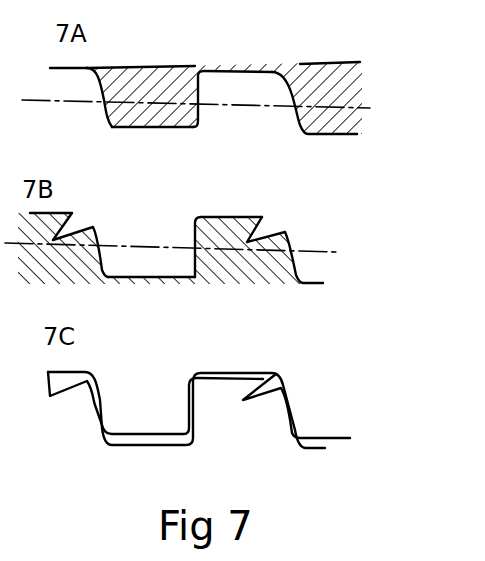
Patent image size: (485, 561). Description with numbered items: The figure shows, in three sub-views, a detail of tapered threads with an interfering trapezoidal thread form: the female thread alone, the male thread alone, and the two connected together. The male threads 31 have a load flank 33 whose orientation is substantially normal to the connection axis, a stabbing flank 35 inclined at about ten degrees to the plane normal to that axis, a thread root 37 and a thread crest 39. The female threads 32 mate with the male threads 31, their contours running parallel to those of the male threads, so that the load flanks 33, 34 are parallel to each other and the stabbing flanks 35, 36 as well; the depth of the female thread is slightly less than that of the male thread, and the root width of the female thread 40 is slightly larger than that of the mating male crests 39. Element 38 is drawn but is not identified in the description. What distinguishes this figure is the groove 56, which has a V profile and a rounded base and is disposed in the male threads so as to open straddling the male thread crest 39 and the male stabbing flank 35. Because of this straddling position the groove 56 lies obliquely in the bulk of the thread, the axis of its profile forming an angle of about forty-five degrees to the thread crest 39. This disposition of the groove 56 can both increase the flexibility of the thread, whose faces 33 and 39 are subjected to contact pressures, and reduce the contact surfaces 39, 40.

The male threads 31 is at (213, 285).
The female threads 32 is at (147, 67).
The load flank 33 is at (193, 251).
The load flank 34 is at (200, 105).
The stabbing flank 35 is at (294, 259).
The stabbing flank 36 is at (296, 104).
The thread root 37 is at (157, 276).
The bottom portion 38 is at (162, 129).
The thread crest 39 is at (44, 212).
The root of the female thread 40 is at (68, 58).
The groove 56 is at (268, 226).